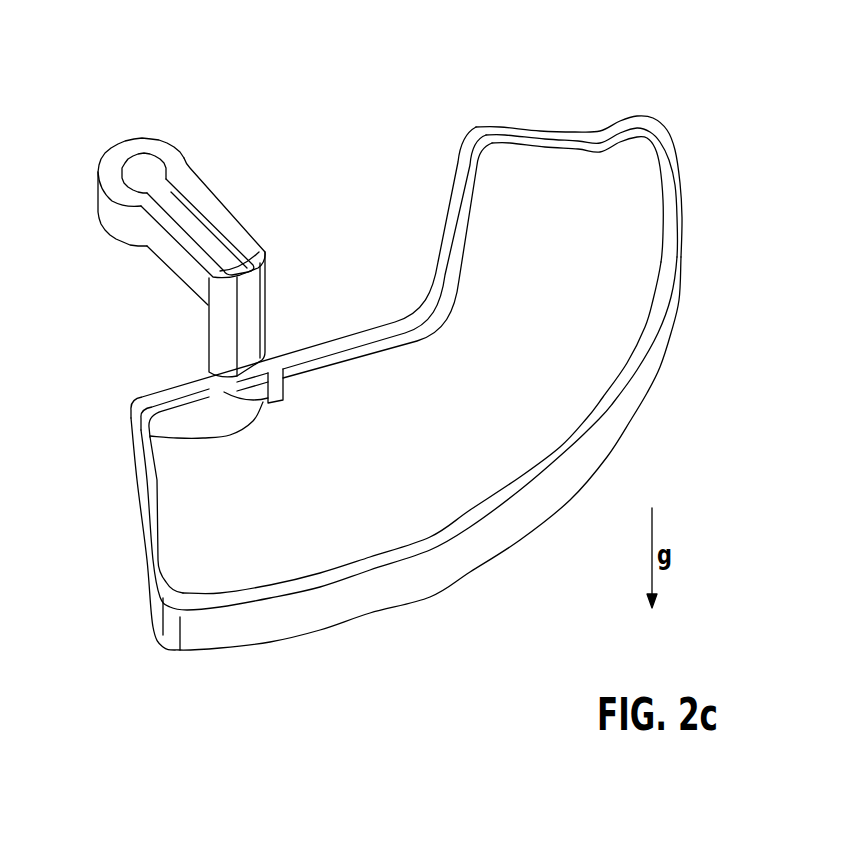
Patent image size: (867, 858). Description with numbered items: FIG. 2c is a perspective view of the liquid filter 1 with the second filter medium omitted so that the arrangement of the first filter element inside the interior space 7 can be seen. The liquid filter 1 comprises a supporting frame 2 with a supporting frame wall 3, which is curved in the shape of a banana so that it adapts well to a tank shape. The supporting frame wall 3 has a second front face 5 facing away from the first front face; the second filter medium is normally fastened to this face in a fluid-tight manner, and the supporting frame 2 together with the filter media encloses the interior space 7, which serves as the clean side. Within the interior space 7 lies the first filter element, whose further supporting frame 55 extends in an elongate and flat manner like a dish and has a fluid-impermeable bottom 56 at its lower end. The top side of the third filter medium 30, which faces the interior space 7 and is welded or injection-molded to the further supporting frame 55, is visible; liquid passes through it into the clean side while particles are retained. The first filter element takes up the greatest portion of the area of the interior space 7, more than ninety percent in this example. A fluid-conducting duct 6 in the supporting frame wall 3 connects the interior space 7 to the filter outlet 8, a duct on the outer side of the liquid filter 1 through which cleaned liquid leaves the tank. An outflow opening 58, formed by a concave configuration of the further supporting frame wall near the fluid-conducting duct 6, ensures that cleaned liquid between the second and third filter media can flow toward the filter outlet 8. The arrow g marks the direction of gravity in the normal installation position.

The liquid filter 1 is at (274, 118).
The supporting frame 2 is at (411, 334).
The supporting frame wall 3 is at (607, 435).
The second front face 5 is at (662, 293).
The fluid-conducting duct 6 is at (270, 380).
The interior space 7 is at (488, 295).
The filter outlet 8 is at (222, 333).
The third filter medium 30 is at (633, 213).
The further supporting frame 55 is at (579, 140).
The bottom 56 is at (552, 195).
The outflow opening 58 is at (150, 433).